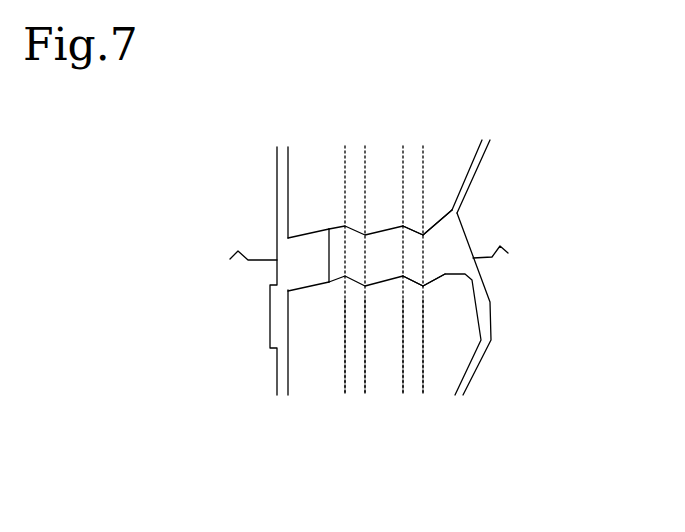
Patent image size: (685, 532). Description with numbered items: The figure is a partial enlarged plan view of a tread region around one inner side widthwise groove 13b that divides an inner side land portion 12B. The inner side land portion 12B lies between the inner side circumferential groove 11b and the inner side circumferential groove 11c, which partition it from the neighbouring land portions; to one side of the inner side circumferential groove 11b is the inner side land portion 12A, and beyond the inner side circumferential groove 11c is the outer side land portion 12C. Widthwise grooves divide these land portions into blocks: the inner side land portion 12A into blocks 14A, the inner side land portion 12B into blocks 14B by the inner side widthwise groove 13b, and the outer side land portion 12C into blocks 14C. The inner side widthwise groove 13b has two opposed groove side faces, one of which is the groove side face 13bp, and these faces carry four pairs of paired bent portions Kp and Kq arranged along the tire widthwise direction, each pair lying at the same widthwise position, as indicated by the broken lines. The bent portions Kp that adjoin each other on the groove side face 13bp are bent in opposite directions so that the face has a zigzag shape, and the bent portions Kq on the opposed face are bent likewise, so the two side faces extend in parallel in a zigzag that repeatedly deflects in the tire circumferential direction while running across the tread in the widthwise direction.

The inner side circumferential groove 11b is at (278, 192).
The inner side circumferential groove 11c is at (486, 151).
The inner side widthwise groove 13b is at (431, 254).
The groove side face 13bp is at (431, 234).
The block 14A is at (245, 272).
The block 14B is at (383, 160).
The block 14C is at (495, 268).
The inner side land portion 12A is at (205, 294).
The inner side land portion 12B is at (376, 291).
The outer side land portion 12C is at (560, 265).
The bent portion Kp is at (423, 235).
The bent portion Kq is at (342, 282).